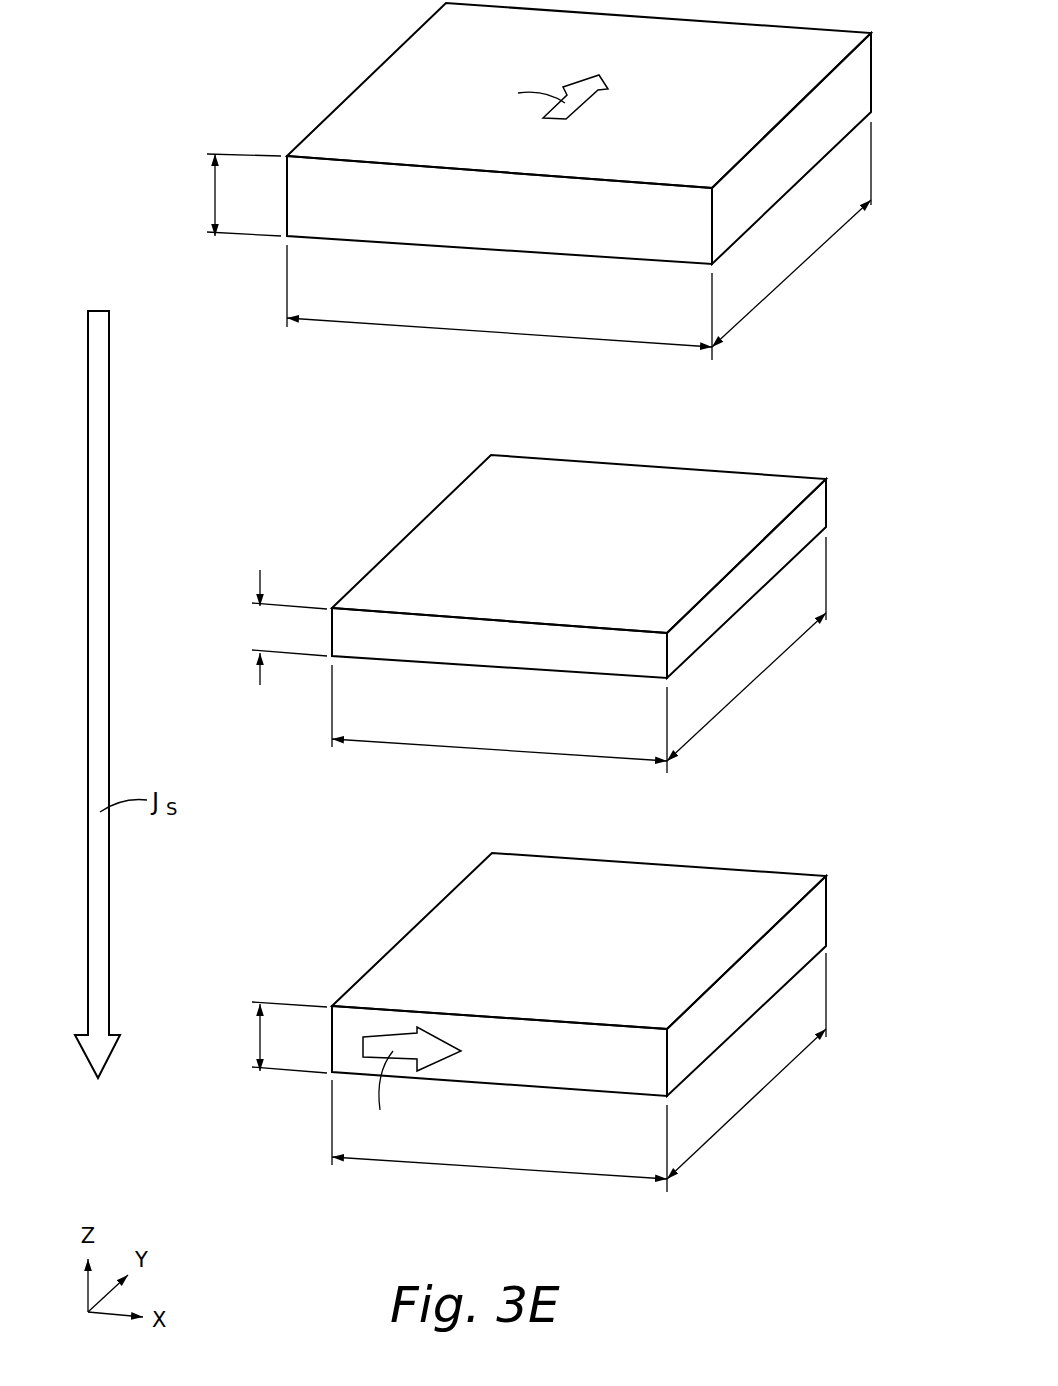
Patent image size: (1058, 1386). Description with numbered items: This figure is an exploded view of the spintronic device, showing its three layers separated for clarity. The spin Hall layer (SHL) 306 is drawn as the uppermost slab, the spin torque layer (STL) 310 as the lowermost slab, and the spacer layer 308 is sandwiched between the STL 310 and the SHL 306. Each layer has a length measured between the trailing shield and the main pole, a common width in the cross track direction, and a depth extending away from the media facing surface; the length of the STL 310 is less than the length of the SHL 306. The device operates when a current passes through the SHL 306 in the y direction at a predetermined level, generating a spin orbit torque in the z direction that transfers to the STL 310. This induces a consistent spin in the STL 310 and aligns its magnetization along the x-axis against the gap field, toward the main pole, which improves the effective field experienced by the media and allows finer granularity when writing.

The spin Hall layer 306 is at (522, 227).
The spacer layer 308 is at (520, 659).
The spin torque layer 310 is at (538, 1066).